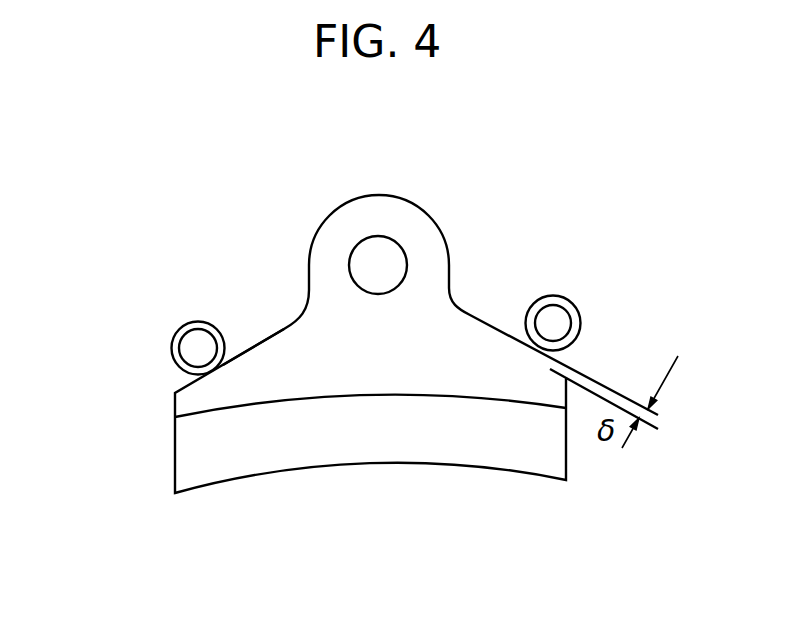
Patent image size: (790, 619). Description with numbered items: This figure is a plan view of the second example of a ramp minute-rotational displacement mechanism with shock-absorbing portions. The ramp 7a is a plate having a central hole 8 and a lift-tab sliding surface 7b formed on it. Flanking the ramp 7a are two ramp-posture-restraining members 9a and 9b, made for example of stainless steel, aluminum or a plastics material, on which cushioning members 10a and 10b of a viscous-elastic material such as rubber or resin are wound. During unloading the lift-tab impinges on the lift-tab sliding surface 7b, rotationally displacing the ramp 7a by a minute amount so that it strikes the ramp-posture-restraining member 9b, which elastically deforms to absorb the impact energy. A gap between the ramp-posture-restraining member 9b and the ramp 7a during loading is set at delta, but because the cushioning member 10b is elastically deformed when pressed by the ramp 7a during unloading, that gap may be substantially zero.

The ramp 7a is at (440, 231).
The lift-tab sliding surface 7b is at (352, 447).
The hole 8 is at (365, 258).
The ramp-posture-restraining member 9a is at (192, 342).
The ramp-posture-restraining member 9b is at (553, 318).
The cushioning member 10a is at (171, 356).
The cushioning member 10b is at (581, 318).